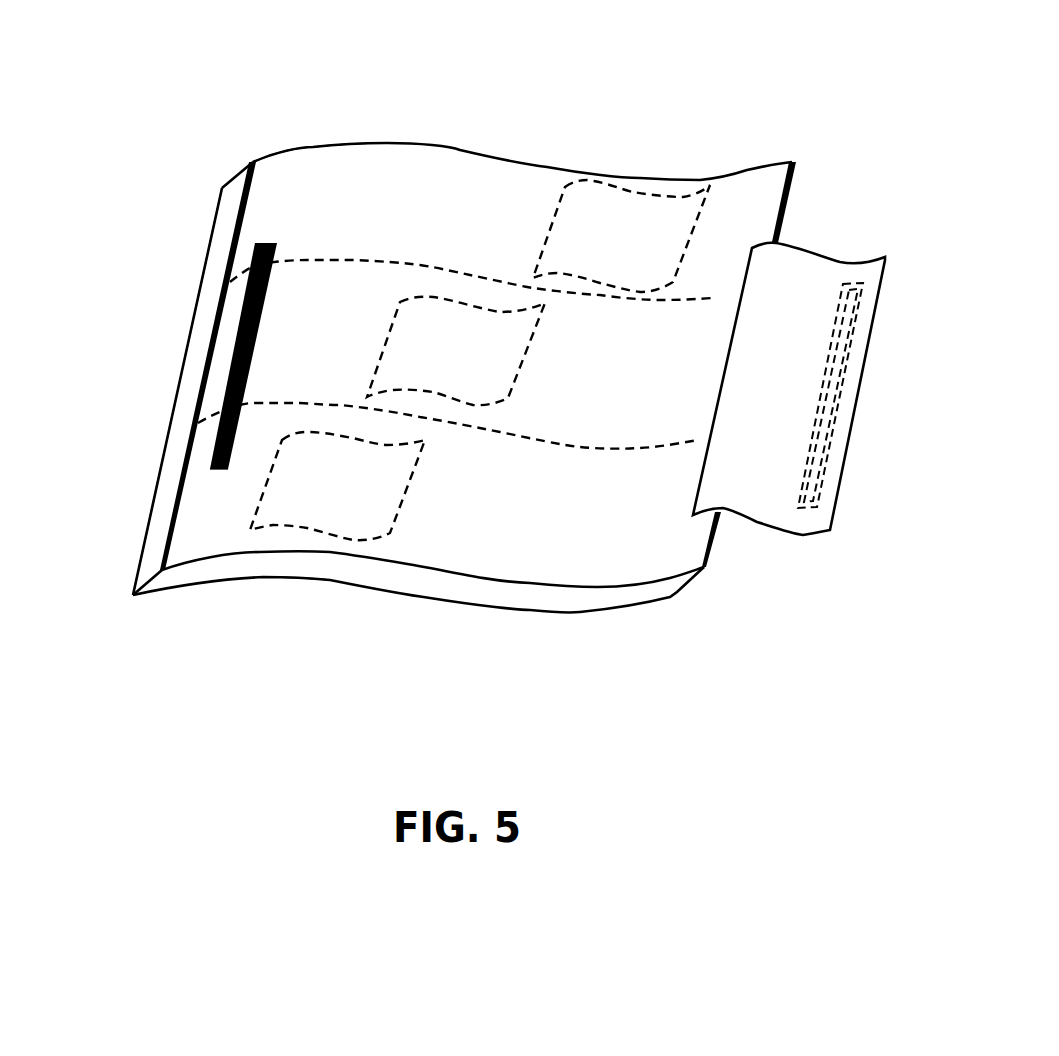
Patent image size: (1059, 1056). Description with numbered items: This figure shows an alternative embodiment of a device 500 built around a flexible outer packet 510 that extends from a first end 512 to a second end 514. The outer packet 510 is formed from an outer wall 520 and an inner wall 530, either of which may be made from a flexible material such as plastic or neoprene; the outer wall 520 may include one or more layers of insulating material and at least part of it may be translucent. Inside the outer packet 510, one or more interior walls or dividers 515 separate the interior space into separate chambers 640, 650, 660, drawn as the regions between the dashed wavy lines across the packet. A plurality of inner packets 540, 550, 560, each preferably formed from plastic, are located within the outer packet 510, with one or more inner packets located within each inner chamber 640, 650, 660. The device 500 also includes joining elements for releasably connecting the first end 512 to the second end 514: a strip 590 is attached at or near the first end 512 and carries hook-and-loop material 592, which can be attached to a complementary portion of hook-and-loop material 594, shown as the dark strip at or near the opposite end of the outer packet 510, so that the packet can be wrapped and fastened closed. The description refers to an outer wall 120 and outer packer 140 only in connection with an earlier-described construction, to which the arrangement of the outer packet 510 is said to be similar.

The device 500 is at (530, 51).
The outer packet 510 is at (508, 197).
The first end 512 is at (702, 565).
The second end 514 is at (235, 189).
The interior walls or dividers 515 is at (697, 440).
The outer wall 520 is at (370, 203).
The inner wall 530 is at (248, 578).
The inner packet 540 is at (352, 518).
The inner packet 550 is at (457, 385).
The inner packet 560 is at (602, 282).
The strip 590 is at (805, 282).
The hook-and-loop material 592 is at (808, 487).
The complementary portion of hook-and-loop material 594 is at (209, 468).
The inner chamber 640 is at (255, 220).
The inner chamber 650 is at (223, 327).
The inner chamber 660 is at (198, 450).
The reference element 140 is at (800, 786).
The reference element 120 is at (195, 876).